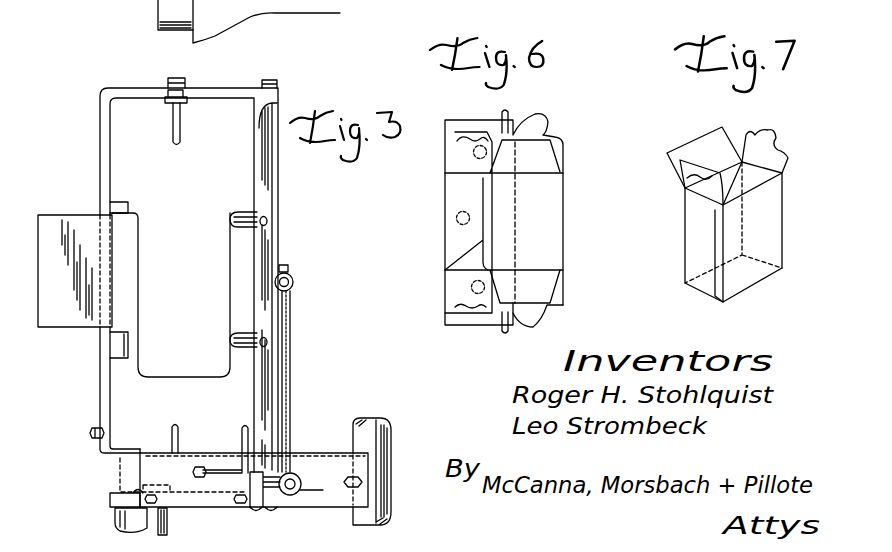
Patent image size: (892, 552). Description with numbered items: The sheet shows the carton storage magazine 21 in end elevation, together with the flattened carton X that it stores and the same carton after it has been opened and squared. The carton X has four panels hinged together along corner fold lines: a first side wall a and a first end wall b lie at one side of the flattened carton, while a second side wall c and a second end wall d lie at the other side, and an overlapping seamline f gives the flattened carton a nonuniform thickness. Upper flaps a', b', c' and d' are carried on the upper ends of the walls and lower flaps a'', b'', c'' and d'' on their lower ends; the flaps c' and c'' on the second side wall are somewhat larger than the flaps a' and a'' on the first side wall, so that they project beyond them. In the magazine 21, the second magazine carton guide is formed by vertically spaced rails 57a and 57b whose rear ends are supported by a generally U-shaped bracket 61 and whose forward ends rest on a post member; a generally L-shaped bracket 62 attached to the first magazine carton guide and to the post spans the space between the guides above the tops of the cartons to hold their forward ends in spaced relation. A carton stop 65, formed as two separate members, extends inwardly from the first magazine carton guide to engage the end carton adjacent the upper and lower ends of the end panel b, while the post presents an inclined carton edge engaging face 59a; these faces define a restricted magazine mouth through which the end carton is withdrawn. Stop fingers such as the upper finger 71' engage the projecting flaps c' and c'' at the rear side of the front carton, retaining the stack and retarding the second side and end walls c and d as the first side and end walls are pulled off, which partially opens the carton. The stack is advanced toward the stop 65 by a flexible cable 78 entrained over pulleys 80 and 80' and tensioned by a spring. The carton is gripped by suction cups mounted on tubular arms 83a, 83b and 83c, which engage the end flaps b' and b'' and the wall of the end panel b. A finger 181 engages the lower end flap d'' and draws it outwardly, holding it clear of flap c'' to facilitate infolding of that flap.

In FIG. 5, the carton magazine 21 is at (295, 225).
In FIG. 5, the L-shaped bracket 62 is at (227, 88).
In FIG. 5, the stop finger 71' is at (200, 124).
In FIG. 6, the stop finger 71' is at (517, 111).
In FIG. 5, the carton stop 65 is at (118, 203).
In FIG. 5, the carton edge engaging face 59a is at (263, 166).
In FIG. 5, the U-shaped bracket 61 is at (128, 277).
In FIG. 5, the rail 57a is at (247, 224).
In FIG. 5, the rail 57b is at (243, 337).
In FIG. 5, the pulley 80 is at (305, 365).
In FIG. 5, the pulley 80' is at (306, 458).
In FIG. 5, the flexible cable 78 is at (287, 383).
In FIG. 5, the finger 181 is at (242, 432).
In FIG. 6, the tubular arm 83a is at (474, 157).
In FIG. 6, the tubular arm 83b is at (457, 218).
In FIG. 6, the tubular arm 83c is at (472, 288).
In FIG. 6, the first side wall a is at (570, 222).
In FIG. 7, the first side wall a is at (794, 234).
In FIG. 6, the upper flap a' is at (573, 149).
In FIG. 6, the lower flap a'' is at (570, 275).
In FIG. 6, the first end wall b is at (431, 242).
In FIG. 7, the first end wall b is at (672, 238).
In FIG. 6, the upper end flap b' is at (434, 139).
In FIG. 7, the upper end flap b' is at (671, 195).
In FIG. 6, the lower end flap b'' is at (426, 288).
In FIG. 6, the second side wall c is at (431, 194).
In FIG. 7, the second side wall c is at (701, 173).
In FIG. 6, the upper flap c' is at (452, 106).
In FIG. 7, the upper flap c' is at (696, 149).
In FIG. 6, the lower flap c'' is at (458, 340).
In FIG. 6, the second end wall d is at (571, 179).
In FIG. 7, the second end wall d is at (762, 143).
In FIG. 6, the upper flap d' is at (541, 110).
In FIG. 7, the upper flap d' is at (796, 138).
In FIG. 6, the lower end flap d'' is at (576, 302).
In FIG. 6, the overlapping seamline f is at (447, 258).
In FIG. 7, the overlapping seamline f is at (717, 252).
In FIG. 6, the carton X is at (567, 120).
In FIG. 7, the carton X is at (784, 120).